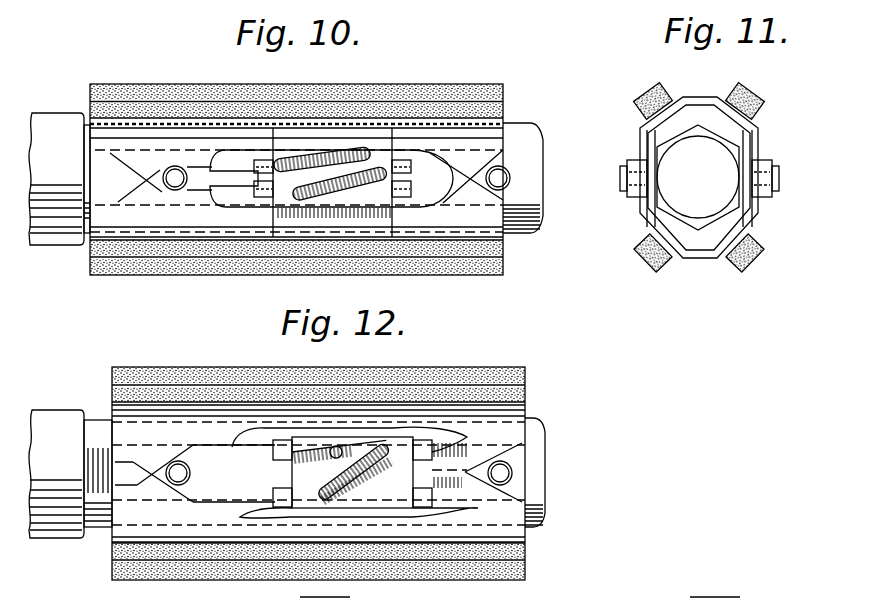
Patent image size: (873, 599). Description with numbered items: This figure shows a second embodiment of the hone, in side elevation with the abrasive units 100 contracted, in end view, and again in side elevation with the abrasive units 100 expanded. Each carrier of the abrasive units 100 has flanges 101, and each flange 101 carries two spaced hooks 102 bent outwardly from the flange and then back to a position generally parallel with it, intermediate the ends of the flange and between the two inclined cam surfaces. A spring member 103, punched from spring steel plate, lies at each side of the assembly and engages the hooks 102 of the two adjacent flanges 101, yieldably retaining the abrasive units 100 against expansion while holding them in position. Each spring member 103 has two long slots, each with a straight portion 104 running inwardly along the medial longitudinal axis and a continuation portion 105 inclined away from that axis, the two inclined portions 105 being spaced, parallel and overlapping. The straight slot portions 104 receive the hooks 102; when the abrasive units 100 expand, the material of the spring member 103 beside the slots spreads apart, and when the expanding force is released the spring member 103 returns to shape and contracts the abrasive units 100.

In FIG. 11, the abrasive unit 100 is at (695, 94).
In FIG. 11, the flange 101 is at (642, 138).
In FIG. 10, the hook 102 is at (408, 172).
In FIG. 11, the hook 102 is at (636, 162).
In FIG. 10, the spring member 103 is at (296, 160).
In FIG. 11, the spring member 103 is at (632, 205).
In FIG. 12, the spring member 103 is at (255, 437).
In FIG. 10, the straight slot portion 104 is at (528, 181).
In FIG. 10, the inclined slot portion 105 is at (288, 180).
In FIG. 12, the inclined slot portion 105 is at (330, 450).